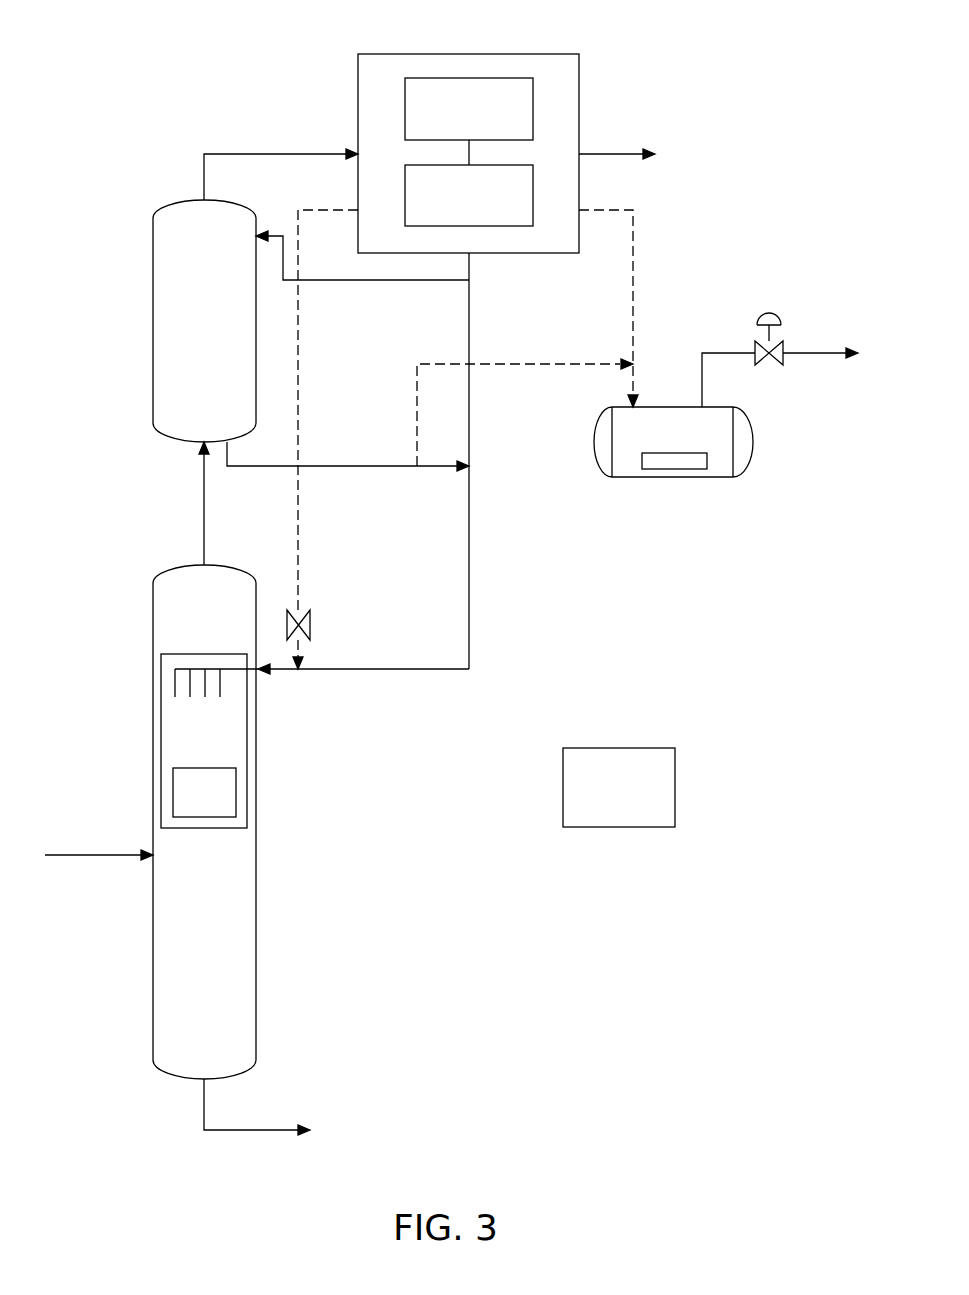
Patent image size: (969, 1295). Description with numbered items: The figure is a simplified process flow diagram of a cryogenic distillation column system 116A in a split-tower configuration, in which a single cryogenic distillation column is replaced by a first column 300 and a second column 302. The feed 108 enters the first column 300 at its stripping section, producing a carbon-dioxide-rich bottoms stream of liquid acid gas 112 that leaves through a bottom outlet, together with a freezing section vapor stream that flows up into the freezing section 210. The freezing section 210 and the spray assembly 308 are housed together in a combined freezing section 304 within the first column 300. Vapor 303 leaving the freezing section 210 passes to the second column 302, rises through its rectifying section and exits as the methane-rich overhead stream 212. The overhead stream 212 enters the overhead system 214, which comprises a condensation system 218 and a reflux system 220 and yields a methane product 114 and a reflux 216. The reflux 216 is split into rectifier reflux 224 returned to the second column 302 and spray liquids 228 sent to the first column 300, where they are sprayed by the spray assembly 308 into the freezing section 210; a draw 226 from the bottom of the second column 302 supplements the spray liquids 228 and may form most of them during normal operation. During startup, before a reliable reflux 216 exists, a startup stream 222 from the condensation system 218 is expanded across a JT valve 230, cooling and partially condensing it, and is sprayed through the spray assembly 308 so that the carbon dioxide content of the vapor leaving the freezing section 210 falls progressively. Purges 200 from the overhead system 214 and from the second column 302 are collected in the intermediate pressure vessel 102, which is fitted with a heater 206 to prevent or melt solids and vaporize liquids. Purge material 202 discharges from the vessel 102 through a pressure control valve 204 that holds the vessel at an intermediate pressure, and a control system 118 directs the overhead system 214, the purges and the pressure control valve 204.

The intermediate pressure vessel 102 is at (714, 477).
The feed 108 is at (108, 855).
The bottoms stream of liquid acid gas 112 is at (255, 1133).
The product 114 is at (610, 154).
The control system 118 is at (638, 797).
The cryogenic distillation column system 116A is at (478, 1201).
The purges 200 is at (635, 250).
The purge material 202 is at (815, 355).
The pressure control valve 204 is at (770, 313).
The heater 206 is at (668, 469).
The freezing section 210 is at (222, 792).
The overhead stream 212 is at (265, 153).
The overhead system 214 is at (412, 54).
The reflux 216 is at (470, 325).
The condensation system 218 is at (503, 78).
The reflux system 220 is at (512, 226).
The startup stream 222 is at (300, 358).
The rectifier reflux 224 is at (385, 282).
The draw 226 is at (383, 468).
The spray liquids 228 is at (378, 672).
The JT valve 230 is at (312, 628).
The first column 300 is at (153, 747).
The second column 302 is at (153, 275).
The vapor 303 is at (205, 498).
The combined freezing section 304 is at (213, 828).
The spray assembly 308 is at (183, 668).